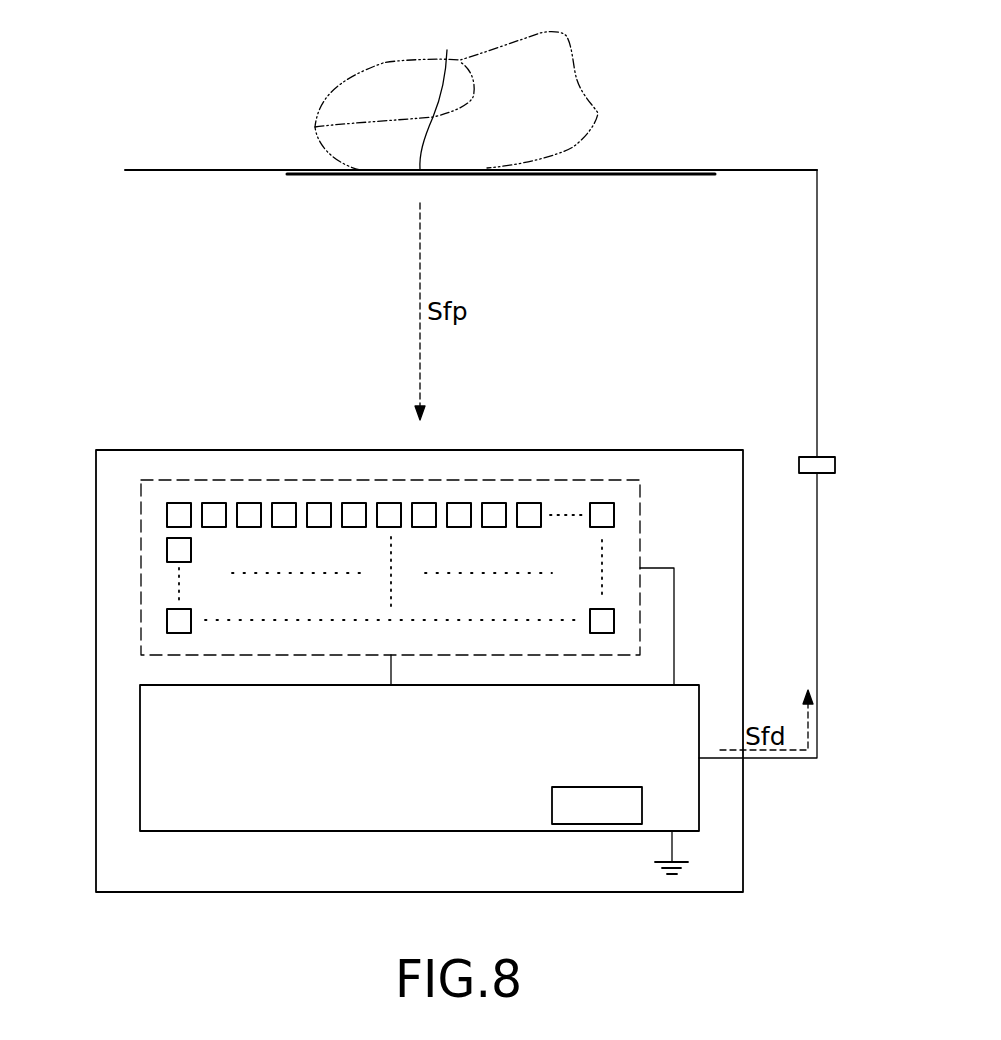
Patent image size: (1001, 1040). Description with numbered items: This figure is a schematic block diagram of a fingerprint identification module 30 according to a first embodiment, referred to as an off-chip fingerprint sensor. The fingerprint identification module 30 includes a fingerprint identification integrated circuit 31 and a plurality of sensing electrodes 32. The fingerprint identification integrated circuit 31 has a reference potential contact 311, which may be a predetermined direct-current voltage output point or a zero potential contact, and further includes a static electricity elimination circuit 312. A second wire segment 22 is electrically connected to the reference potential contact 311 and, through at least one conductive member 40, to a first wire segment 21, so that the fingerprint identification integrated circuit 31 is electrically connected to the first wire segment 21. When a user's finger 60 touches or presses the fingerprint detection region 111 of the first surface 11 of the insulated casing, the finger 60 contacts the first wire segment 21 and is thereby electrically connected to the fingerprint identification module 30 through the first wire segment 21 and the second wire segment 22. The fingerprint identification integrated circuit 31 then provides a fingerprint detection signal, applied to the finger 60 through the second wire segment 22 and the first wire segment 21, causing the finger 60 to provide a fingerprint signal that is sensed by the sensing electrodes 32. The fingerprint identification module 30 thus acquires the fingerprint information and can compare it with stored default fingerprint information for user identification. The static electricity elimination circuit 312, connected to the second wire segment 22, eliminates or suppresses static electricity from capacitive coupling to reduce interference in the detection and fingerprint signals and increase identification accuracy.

The first surface 11 is at (223, 170).
The fingerprint detection region 111 is at (443, 97).
The first wire segment 21 is at (602, 170).
The second wire segment 22 is at (817, 617).
The fingerprint identification module 30 is at (271, 450).
The fingerprint identification integrated circuit 31 is at (140, 760).
The reference potential contact 311 is at (672, 847).
The static electricity elimination circuit 312 is at (597, 787).
The sensing electrodes 32 is at (450, 480).
The conductive member 40 is at (835, 465).
The finger 60 is at (383, 75).